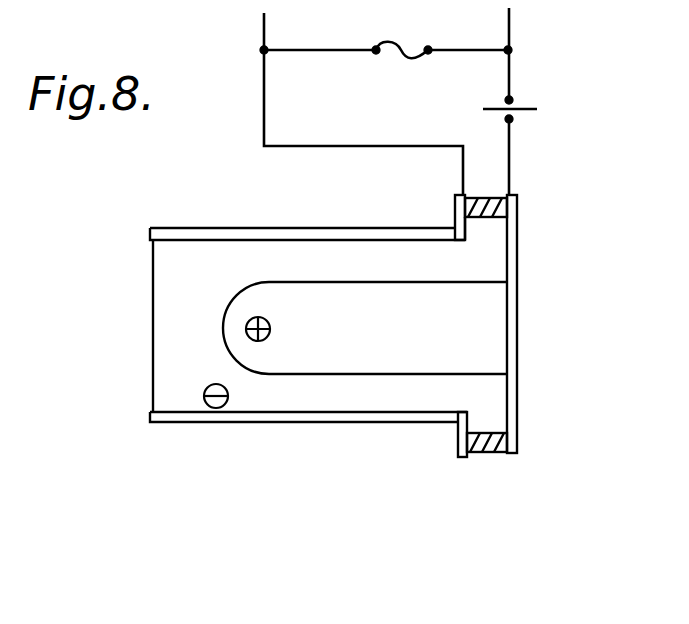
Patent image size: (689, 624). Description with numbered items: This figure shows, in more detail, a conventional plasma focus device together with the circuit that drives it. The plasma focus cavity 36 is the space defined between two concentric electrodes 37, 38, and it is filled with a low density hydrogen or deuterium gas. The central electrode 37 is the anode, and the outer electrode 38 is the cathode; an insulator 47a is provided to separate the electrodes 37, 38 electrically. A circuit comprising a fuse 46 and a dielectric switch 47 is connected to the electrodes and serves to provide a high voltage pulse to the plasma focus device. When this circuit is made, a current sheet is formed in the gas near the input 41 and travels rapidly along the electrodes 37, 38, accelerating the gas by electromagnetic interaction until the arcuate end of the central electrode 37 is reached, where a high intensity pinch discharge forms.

The plasma focus cavity 36 is at (173, 316).
The central electrode 37 is at (360, 282).
The outer electrode 38 is at (188, 232).
The input 41 is at (475, 258).
The fuse 46 is at (402, 42).
The dielectric switch 47 is at (516, 108).
The insulator 47a is at (490, 453).